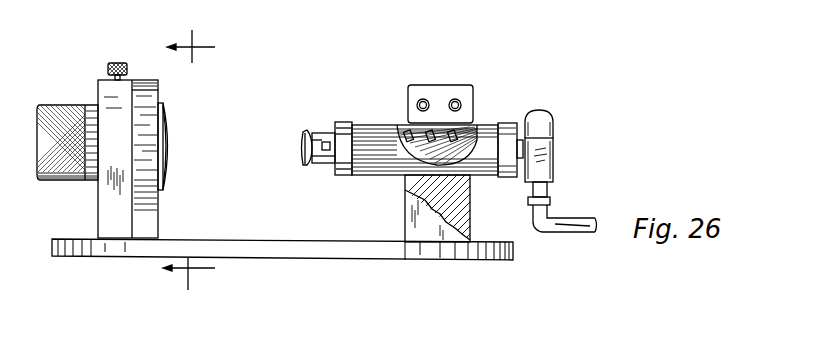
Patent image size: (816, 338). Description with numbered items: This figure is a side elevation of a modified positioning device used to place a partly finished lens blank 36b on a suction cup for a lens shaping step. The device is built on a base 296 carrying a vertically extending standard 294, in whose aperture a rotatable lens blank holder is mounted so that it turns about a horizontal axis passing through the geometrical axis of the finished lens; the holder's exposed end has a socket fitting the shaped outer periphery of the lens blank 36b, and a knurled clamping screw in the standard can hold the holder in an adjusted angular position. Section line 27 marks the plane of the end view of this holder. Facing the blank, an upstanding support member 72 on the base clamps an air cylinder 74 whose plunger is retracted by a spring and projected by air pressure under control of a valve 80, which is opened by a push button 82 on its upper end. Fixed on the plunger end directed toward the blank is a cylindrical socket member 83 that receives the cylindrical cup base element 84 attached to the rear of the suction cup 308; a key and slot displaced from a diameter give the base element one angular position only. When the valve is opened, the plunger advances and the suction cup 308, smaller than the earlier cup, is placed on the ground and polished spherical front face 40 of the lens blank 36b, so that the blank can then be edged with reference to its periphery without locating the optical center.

The section line for FIG. 27 is at (189, 160).
The base 296 is at (383, 253).
The standard 294 is at (121, 221).
The lens blank 36b is at (164, 107).
The front face 40 is at (171, 156).
The cup base element 84 is at (308, 166).
The socket member 83 is at (327, 161).
The suction cup 308 is at (309, 132).
The air cylinder 74 is at (388, 95).
The support member 72 is at (465, 201).
The valve 80 is at (542, 173).
The push button 82 is at (538, 110).